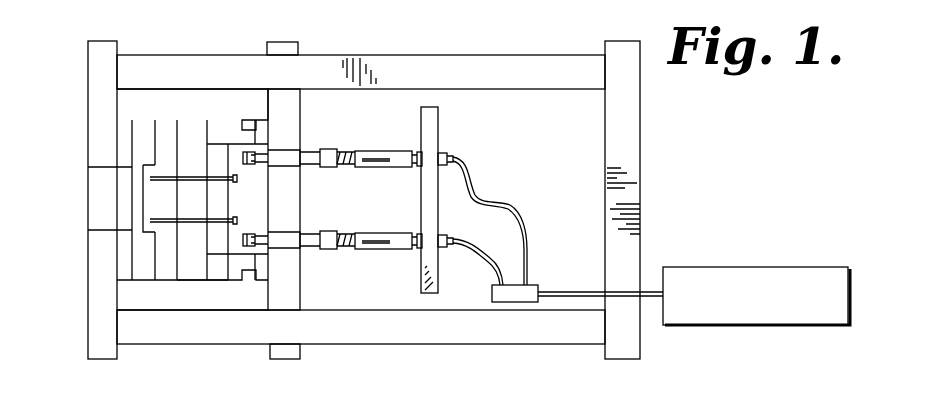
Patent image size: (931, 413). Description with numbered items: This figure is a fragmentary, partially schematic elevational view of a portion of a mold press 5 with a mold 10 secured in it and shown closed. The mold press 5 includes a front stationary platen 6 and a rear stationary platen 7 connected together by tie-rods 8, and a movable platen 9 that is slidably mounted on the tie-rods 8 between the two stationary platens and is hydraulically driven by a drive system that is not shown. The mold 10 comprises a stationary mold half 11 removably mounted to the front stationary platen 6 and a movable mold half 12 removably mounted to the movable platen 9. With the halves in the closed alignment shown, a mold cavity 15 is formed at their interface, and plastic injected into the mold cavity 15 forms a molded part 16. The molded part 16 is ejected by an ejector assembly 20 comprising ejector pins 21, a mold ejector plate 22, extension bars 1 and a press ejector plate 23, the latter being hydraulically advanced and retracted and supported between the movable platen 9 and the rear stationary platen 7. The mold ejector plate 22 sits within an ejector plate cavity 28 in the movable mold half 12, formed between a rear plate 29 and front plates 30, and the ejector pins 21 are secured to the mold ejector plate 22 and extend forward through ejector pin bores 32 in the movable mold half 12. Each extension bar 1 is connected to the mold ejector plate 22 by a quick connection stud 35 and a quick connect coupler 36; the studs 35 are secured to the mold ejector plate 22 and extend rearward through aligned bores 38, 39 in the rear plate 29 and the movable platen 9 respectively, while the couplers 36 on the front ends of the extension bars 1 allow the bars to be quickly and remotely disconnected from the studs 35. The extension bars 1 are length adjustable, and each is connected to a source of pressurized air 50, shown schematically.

The extension bar 1 is at (356, 168).
The mold press 5 is at (648, 157).
The front stationary platen 6 is at (88, 78).
The rear stationary platen 7 is at (640, 221).
The tie-rods 8 is at (545, 55).
The movable platen 9 is at (300, 44).
The mold 10 is at (157, 284).
The stationary mold half 11 is at (131, 137).
The movable mold half 12 is at (211, 120).
The mold cavity 15 is at (150, 196).
The molded part 16 is at (142, 232).
The ejector assembly 20 is at (360, 268).
The ejector pins 21 is at (167, 177).
The mold ejector plate 22 is at (245, 205).
The press ejector plate 23 is at (432, 107).
The ejector plate cavity 28 is at (220, 148).
The rear plate 29 is at (224, 280).
The front plates 30 is at (192, 281).
The ejector pin bores 32 is at (185, 182).
The quick connection stud 35 is at (257, 152).
The quick connect coupler 36 is at (285, 148).
The bore in rear plate 38 is at (283, 248).
The bore in movable platen 39 is at (253, 250).
The source of pressurized air 50 is at (757, 327).